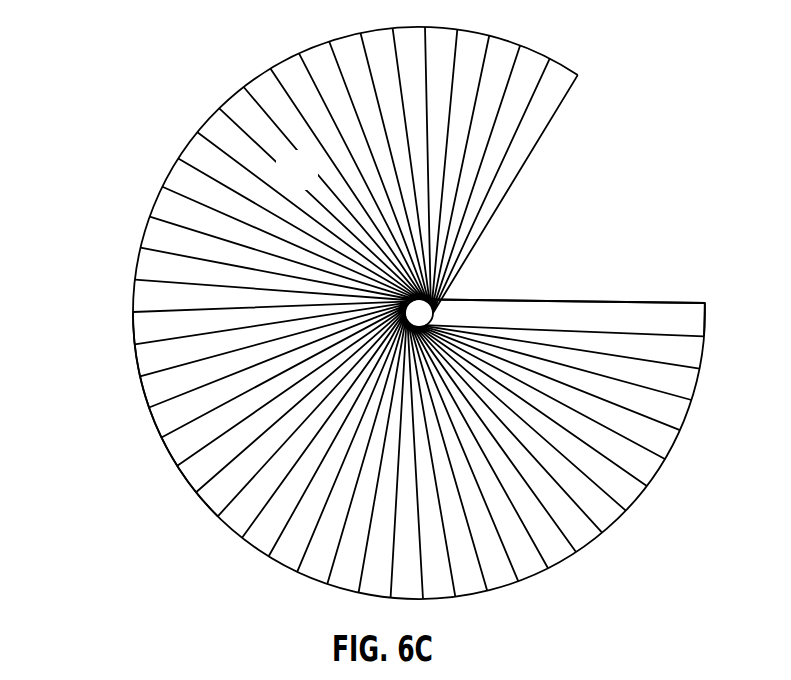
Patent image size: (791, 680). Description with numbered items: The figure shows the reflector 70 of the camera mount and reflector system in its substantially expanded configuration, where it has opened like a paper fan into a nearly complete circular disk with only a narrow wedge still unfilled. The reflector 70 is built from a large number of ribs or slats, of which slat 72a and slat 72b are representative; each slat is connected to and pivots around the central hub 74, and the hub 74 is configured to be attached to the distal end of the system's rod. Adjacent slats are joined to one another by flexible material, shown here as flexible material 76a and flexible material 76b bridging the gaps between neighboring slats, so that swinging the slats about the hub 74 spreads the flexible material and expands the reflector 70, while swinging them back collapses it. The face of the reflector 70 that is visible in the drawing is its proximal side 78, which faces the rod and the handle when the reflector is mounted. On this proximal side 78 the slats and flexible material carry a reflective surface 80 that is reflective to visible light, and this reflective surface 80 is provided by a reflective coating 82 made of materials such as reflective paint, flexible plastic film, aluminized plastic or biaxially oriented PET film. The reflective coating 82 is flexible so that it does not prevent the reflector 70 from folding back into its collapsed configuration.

The reflector 70 is at (92, 170).
The slat 72a is at (590, 312).
The slat 72b is at (686, 383).
The hub 74 is at (420, 315).
The flexible material 76a is at (690, 351).
The flexible material 76b is at (676, 411).
The proximal side 78 is at (313, 180).
The reflective surface 80 is at (192, 476).
The reflective coating 82 is at (300, 522).